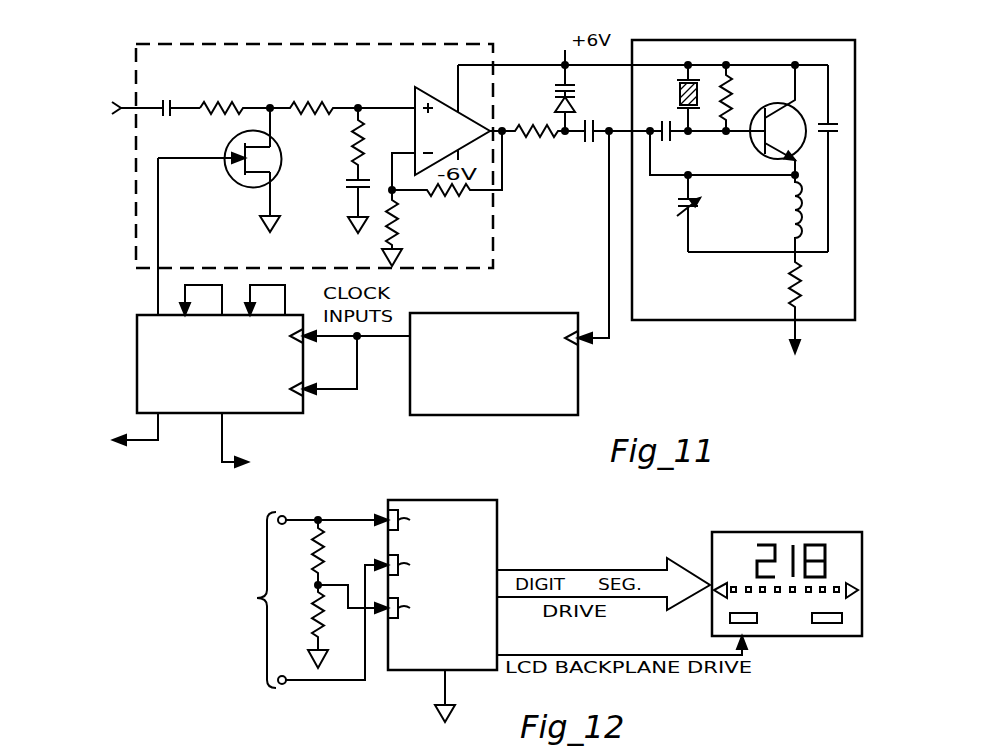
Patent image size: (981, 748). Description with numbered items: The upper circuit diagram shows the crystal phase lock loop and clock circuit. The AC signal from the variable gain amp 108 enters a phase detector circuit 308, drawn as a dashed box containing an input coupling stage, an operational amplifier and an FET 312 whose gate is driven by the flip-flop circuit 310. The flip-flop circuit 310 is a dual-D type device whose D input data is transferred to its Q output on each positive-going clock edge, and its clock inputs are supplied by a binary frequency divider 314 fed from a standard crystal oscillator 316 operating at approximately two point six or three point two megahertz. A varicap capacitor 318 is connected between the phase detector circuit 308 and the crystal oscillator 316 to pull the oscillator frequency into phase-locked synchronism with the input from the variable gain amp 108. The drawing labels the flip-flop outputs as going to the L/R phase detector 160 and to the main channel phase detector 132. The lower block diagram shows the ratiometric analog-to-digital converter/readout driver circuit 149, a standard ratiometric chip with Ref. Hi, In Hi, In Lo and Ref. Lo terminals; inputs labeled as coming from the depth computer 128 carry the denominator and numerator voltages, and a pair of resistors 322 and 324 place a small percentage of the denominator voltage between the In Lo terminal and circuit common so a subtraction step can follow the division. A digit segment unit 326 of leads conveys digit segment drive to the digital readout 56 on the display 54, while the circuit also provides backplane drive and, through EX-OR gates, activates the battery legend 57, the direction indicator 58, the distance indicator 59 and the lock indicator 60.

In FIG. 11, the phase detector circuit 308 is at (378, 44).
In FIG. 11, the FET 312 is at (283, 150).
In FIG. 11, the varicap capacitor 318 is at (572, 96).
In FIG. 11, the crystal oscillator 316 is at (723, 40).
In FIG. 11, the binary frequency divider 314 is at (505, 313).
In FIG. 11, the flip-flop circuit 310 is at (246, 414).
In FIG. 11, the variable gain amp 108 is at (97, 114).
In FIG. 11, the L/R phase detector 160 is at (131, 466).
In FIG. 11, the main channel phase detector 132 is at (328, 466).
In FIG. 12, the depth computer 128 is at (206, 600).
In FIG. 12, the resistor 322 is at (321, 555).
In FIG. 12, the resistor 324 is at (323, 618).
In FIG. 12, the ratiometric analog-to-digital converter/readout driver circuit 149 is at (446, 500).
In FIG. 12, the digit segment unit 326 is at (572, 570).
In FIG. 12, the display 54 is at (762, 532).
In FIG. 12, the digital readout 56 is at (758, 566).
In FIG. 12, the direction indicator 58 is at (717, 598).
In FIG. 12, the distance indicator 59 is at (808, 586).
In FIG. 12, the battery legend 57 is at (748, 624).
In FIG. 12, the lock indicator 60 is at (829, 624).